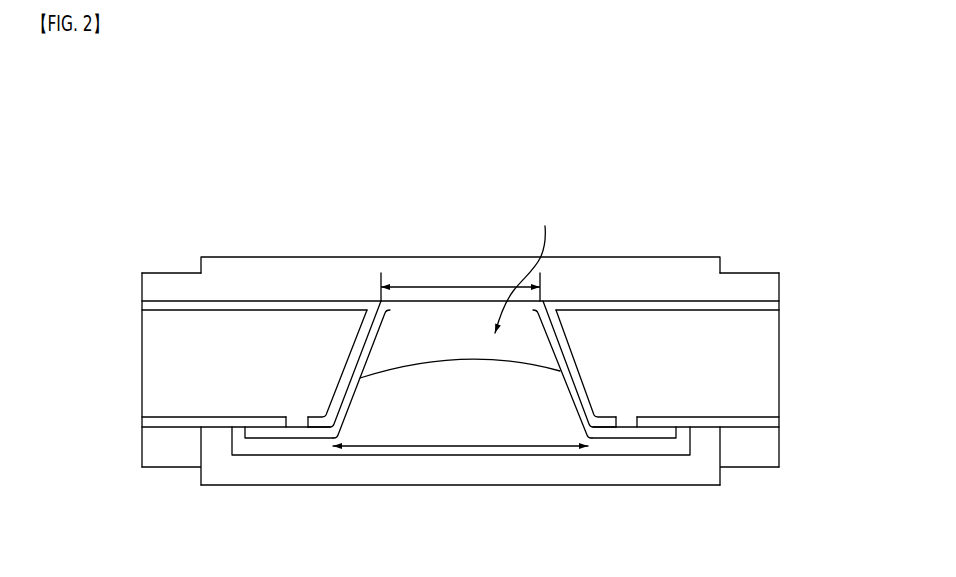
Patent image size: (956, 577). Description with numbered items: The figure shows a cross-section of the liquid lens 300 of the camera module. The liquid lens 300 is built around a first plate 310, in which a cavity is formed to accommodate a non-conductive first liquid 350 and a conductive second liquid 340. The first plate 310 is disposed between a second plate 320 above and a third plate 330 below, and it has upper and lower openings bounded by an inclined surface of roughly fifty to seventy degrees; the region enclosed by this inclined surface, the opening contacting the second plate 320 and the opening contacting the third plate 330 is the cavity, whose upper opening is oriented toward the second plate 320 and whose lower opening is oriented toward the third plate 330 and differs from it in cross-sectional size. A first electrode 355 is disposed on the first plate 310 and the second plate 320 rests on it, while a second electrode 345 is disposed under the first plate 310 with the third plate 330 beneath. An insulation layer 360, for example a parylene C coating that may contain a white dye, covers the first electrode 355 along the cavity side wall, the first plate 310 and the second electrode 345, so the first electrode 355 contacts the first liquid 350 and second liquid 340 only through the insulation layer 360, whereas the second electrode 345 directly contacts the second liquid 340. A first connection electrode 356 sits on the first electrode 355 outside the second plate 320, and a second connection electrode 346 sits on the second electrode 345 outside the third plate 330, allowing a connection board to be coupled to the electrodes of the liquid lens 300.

The liquid lens 300 is at (779, 183).
The second plate 320 is at (642, 290).
The first connection electrode 356 is at (765, 284).
The first electrode 355 is at (766, 307).
The first plate 310 is at (765, 367).
The first liquid 350 is at (423, 330).
The second electrode 345 is at (765, 425).
The insulation layer 360 is at (628, 428).
The second liquid 340 is at (523, 428).
The second connection electrode 346 is at (765, 455).
The third plate 330 is at (692, 472).